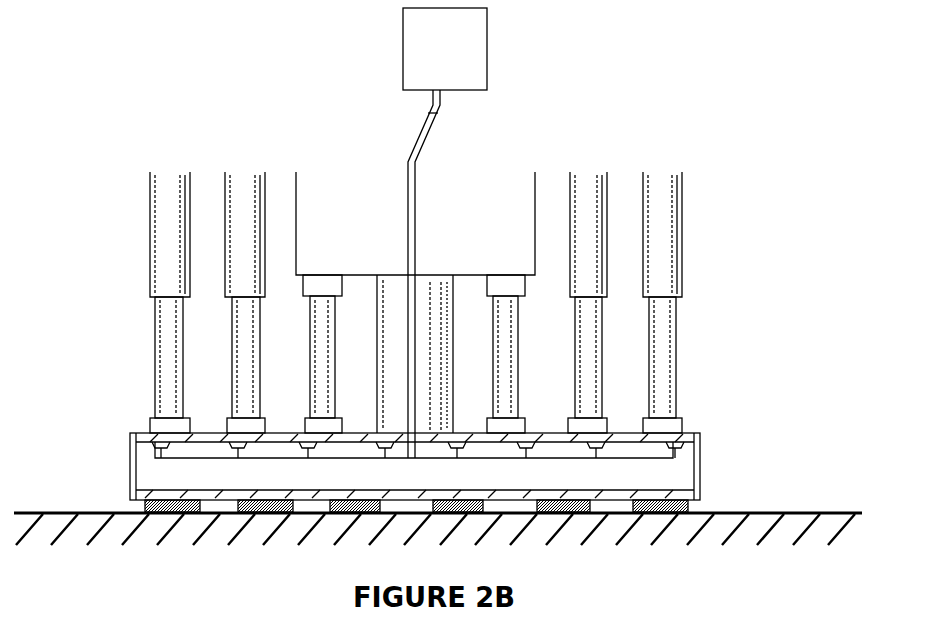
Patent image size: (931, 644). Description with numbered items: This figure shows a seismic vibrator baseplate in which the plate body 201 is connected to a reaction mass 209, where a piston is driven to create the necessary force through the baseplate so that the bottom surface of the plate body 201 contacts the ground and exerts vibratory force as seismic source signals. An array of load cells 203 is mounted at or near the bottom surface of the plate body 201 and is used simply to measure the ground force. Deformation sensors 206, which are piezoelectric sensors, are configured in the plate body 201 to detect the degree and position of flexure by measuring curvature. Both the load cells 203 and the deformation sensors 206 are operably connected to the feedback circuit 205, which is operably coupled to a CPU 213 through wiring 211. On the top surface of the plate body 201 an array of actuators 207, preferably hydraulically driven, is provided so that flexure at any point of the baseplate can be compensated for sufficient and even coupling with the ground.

The plate body 201 is at (702, 447).
The load cells 203 is at (693, 507).
The feedback circuit 205 is at (200, 460).
The deformation sensors 206 is at (128, 445).
The actuators 207 is at (682, 280).
The reaction mass 209 is at (523, 195).
The wiring 211 is at (408, 160).
The CPU 213 is at (424, 82).